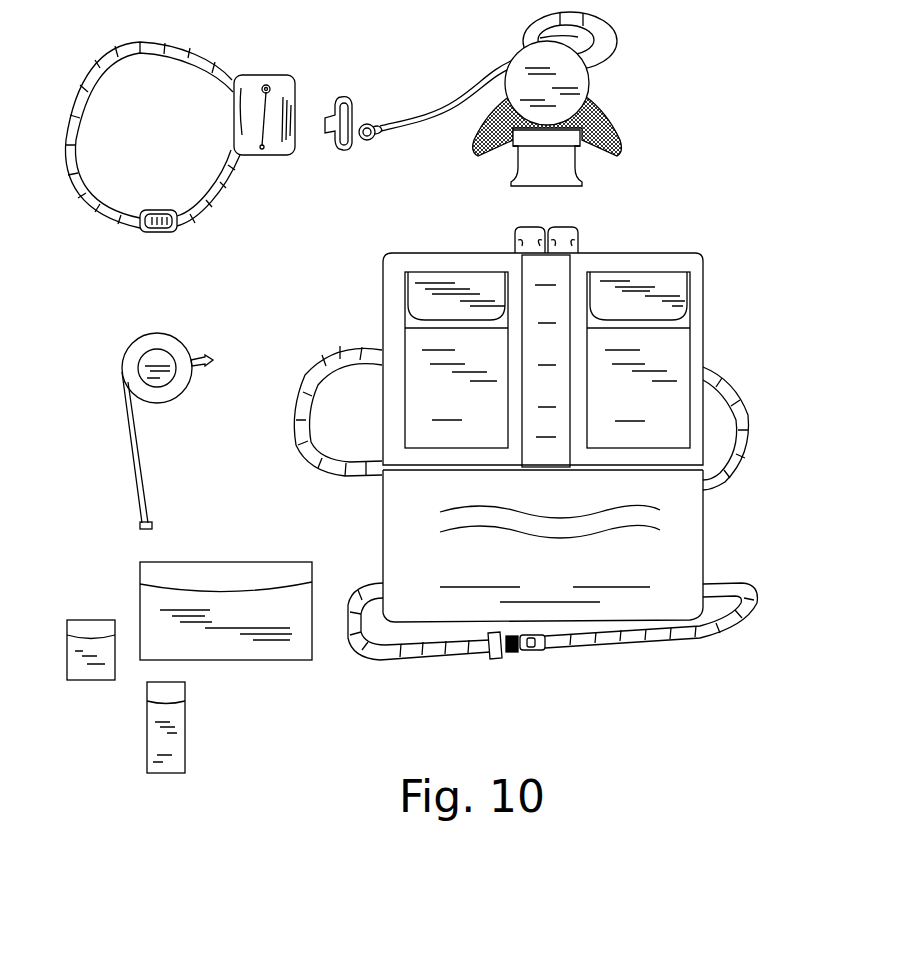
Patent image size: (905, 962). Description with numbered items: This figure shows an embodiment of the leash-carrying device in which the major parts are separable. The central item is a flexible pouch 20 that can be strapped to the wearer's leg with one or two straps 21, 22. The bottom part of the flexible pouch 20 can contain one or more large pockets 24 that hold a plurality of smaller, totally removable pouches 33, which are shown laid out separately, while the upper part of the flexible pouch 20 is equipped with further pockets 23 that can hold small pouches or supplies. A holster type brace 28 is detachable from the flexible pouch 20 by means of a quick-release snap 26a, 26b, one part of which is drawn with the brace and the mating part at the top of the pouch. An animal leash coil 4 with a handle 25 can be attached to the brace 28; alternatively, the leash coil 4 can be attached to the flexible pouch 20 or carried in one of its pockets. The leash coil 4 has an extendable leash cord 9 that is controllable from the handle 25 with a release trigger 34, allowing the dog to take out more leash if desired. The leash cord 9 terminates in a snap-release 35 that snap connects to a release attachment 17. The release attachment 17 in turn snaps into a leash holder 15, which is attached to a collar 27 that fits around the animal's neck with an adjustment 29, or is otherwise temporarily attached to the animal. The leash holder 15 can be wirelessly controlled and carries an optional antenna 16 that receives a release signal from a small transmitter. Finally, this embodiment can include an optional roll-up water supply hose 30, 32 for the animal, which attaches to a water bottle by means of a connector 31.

The animal leash coil 4 is at (508, 62).
The extendable leash cord 9 is at (446, 115).
The leash holder 15 is at (285, 85).
The antenna 16 is at (268, 150).
The release attachment 17 is at (347, 97).
The flexible pouch 20 is at (514, 445).
The strap 21 is at (744, 386).
The strap 22 is at (631, 652).
The pockets 23 is at (677, 342).
The large pockets 24 is at (683, 538).
The handle 25 is at (603, 35).
The quick-release snap 26a is at (585, 177).
The quick-release snap 26b is at (548, 228).
The collar 27 is at (103, 225).
The holster type brace 28 is at (604, 128).
The adjustment 29 is at (157, 234).
The roll-up water supply hose 30 is at (128, 362).
The connector 31 is at (201, 342).
The roll-up water supply hose 32 is at (145, 468).
The smaller removable pouches 33 is at (230, 699).
The release trigger 34 is at (547, 35).
The snap-release 35 is at (373, 141).